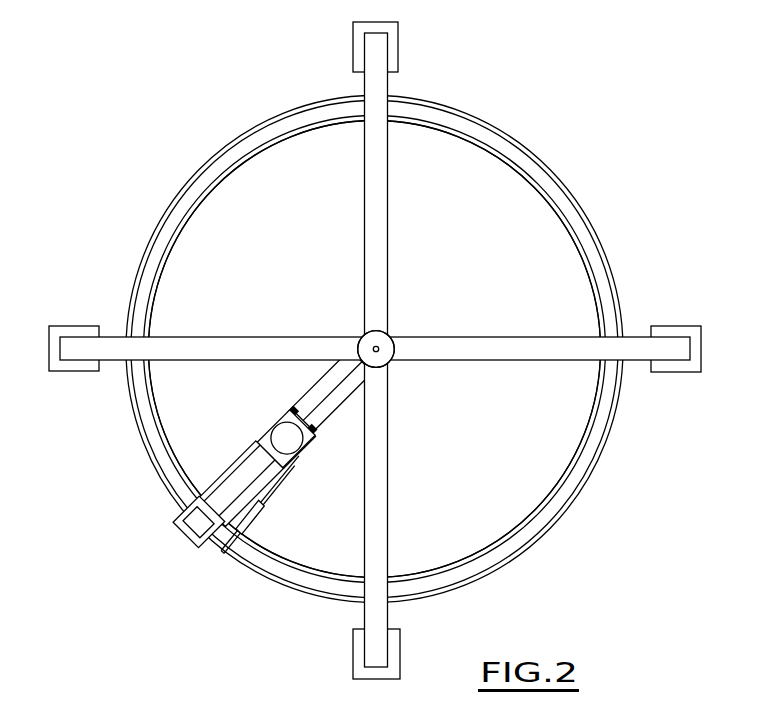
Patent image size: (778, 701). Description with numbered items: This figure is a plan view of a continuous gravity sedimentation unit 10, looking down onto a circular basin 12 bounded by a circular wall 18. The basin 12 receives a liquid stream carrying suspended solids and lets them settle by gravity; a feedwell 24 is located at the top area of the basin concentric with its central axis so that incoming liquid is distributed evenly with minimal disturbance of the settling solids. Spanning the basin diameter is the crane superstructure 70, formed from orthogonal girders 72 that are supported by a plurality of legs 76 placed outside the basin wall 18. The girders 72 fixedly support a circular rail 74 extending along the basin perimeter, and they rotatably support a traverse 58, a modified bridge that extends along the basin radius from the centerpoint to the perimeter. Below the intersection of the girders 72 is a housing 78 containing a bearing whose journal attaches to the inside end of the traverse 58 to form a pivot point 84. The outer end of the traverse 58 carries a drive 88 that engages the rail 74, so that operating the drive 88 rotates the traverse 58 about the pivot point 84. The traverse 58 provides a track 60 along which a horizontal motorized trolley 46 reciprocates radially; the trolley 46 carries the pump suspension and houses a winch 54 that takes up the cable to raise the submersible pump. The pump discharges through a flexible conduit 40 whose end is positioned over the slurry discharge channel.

The continuous gravity sedimentation unit 10 is at (108, 470).
The basin 12 is at (527, 247).
The circular wall 18 is at (520, 170).
The feedwell 24 is at (392, 332).
The flexible conduit 40 is at (270, 507).
The horizontal motorized trolley 46 is at (255, 510).
The winch 54 is at (289, 440).
The traverse 58 is at (213, 480).
The track 60 is at (311, 392).
The superstructure 70 is at (560, 375).
The girders 72 is at (389, 163).
The circular rail 74 is at (483, 120).
The legs 76 is at (381, 22).
The housing 78 is at (380, 358).
The pivot point 84 is at (376, 349).
The drive 88 is at (197, 522).